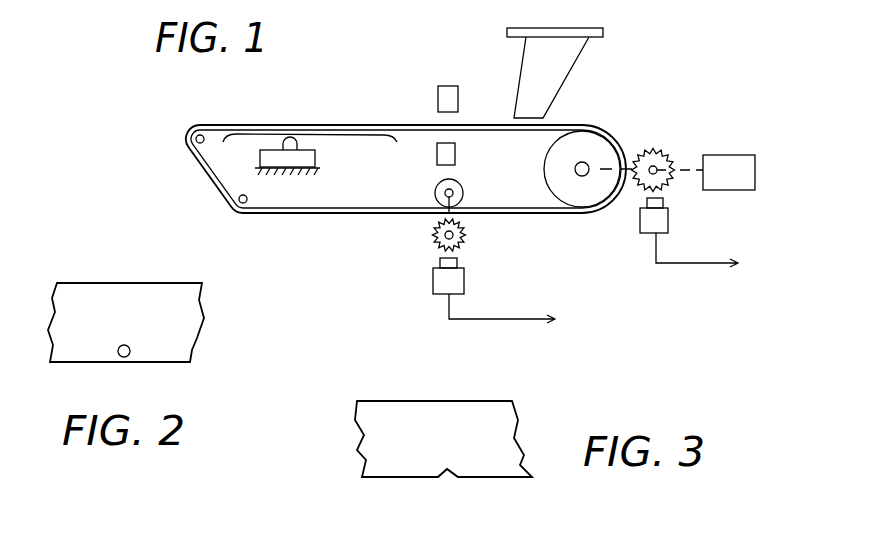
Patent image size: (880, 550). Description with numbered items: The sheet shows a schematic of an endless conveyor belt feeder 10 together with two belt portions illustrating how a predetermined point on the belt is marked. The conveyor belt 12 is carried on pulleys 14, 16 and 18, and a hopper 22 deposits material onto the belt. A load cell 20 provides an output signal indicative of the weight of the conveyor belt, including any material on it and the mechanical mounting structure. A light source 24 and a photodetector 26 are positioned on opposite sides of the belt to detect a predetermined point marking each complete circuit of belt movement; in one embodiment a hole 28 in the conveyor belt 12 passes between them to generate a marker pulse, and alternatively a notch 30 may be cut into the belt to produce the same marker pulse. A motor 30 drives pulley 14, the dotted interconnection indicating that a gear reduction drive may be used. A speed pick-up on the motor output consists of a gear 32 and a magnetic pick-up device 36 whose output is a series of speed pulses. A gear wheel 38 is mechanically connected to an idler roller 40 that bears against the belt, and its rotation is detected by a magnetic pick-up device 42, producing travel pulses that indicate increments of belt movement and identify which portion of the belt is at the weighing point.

In FIG. 1, the feeder 10 is at (628, 87).
In FIG. 1, the conveyor belt 12 is at (607, 141).
In FIG. 2, the conveyor belt 12 is at (143, 283).
In FIG. 3, the conveyor belt 12 is at (418, 401).
In FIG. 1, the pulley 14 is at (548, 180).
In FIG. 1, the pulley 16 is at (209, 146).
In FIG. 1, the pulley 18 is at (253, 197).
In FIG. 1, the load cell 20 is at (316, 158).
In FIG. 1, the hopper 22 is at (591, 29).
In FIG. 1, the light source 24 is at (456, 152).
In FIG. 1, the photodetector 26 is at (437, 92).
In FIG. 2, the hole 28 is at (128, 357).
In FIG. 1, the notch 30 is at (736, 155).
In FIG. 3, the notch 30 is at (450, 480).
In FIG. 1, the gear 32 is at (660, 152).
In FIG. 1, the magnetic pick-up device 36 is at (668, 219).
In FIG. 1, the gear wheel 38 is at (466, 234).
In FIG. 1, the idler roller 40 is at (435, 191).
In FIG. 1, the magnetic pick-up device 42 is at (433, 279).